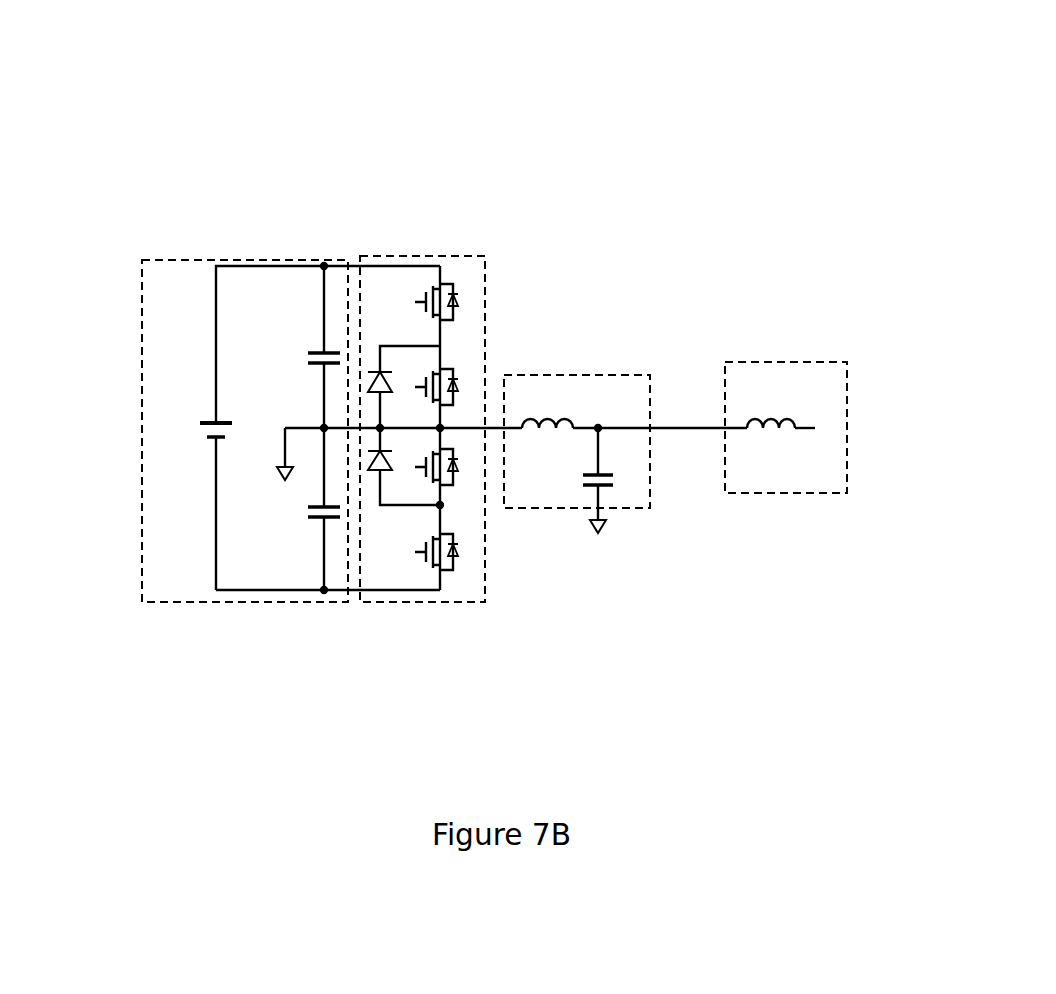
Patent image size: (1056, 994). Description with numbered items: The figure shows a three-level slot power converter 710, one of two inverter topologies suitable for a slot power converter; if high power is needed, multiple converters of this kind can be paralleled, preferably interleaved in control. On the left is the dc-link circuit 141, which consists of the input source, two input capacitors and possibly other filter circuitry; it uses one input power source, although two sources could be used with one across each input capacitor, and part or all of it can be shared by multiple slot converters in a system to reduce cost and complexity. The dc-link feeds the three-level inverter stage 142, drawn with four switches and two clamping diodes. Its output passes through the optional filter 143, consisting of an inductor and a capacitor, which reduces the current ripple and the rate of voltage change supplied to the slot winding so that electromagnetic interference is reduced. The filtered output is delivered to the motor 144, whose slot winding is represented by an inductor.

The three-level slot power converter 710 is at (922, 110).
The dc-link circuit 141 is at (292, 256).
The inverter switching circuit 142 is at (462, 602).
The optional filter 143 is at (547, 511).
The motor 144 is at (787, 497).